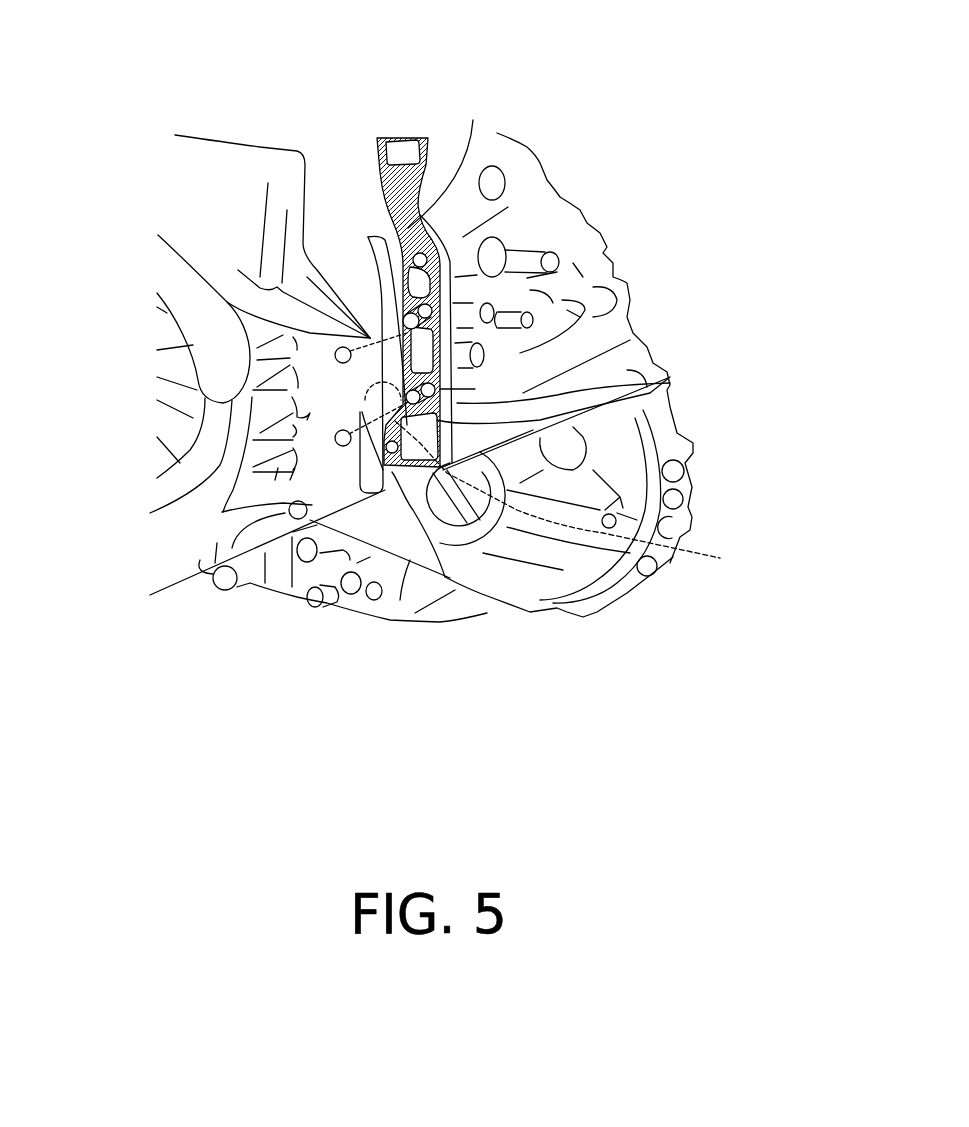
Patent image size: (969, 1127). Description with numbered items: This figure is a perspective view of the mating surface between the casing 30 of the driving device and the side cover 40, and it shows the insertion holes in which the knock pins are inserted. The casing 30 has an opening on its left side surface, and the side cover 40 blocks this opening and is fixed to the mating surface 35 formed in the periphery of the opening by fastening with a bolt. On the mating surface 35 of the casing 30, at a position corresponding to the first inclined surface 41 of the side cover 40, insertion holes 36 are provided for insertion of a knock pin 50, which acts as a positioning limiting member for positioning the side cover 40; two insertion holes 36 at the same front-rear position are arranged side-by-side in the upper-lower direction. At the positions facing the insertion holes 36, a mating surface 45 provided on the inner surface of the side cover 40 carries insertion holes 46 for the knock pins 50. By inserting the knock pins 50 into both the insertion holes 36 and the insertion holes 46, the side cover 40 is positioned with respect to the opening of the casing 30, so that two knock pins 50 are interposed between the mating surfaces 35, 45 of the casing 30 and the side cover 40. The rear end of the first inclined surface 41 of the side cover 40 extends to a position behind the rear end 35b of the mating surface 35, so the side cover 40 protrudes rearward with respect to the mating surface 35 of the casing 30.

The casing 30 is at (541, 164).
The mating surface 35 is at (408, 228).
The rear end of the mating surface 35b is at (673, 392).
The insertion hole 36 is at (440, 391).
The side cover 40 is at (231, 144).
The first inclined surface 41 is at (443, 560).
The mating surface 45 is at (575, 500).
The insertion hole 46 is at (340, 347).
The knock pin 50 is at (369, 239).